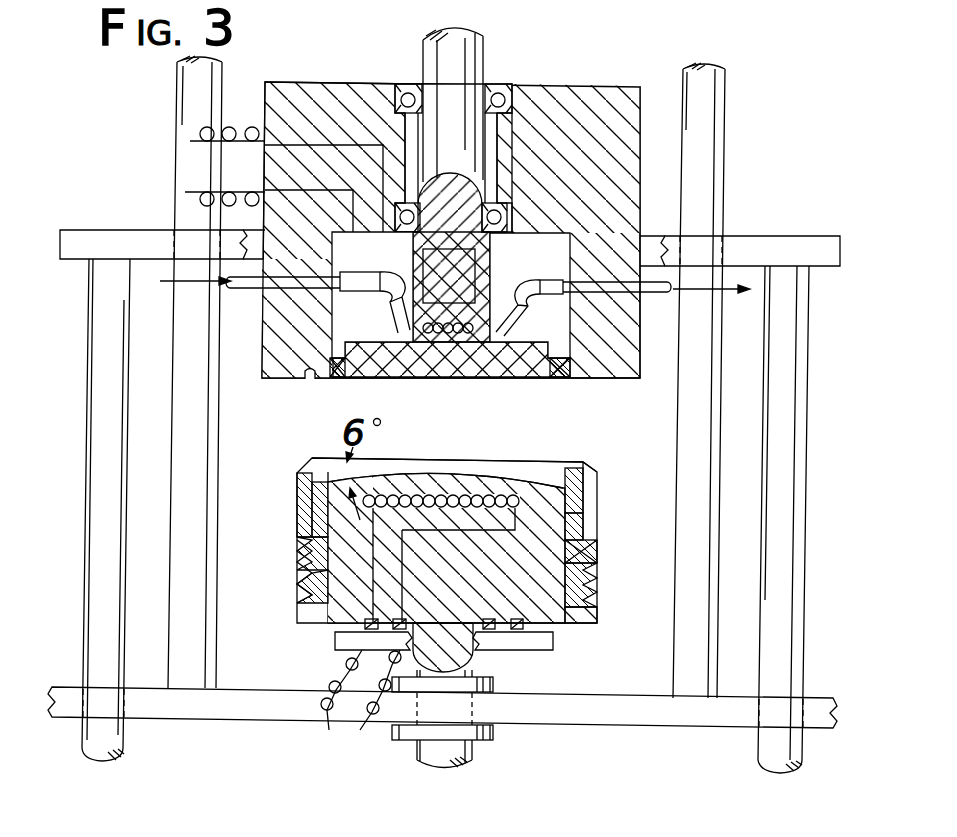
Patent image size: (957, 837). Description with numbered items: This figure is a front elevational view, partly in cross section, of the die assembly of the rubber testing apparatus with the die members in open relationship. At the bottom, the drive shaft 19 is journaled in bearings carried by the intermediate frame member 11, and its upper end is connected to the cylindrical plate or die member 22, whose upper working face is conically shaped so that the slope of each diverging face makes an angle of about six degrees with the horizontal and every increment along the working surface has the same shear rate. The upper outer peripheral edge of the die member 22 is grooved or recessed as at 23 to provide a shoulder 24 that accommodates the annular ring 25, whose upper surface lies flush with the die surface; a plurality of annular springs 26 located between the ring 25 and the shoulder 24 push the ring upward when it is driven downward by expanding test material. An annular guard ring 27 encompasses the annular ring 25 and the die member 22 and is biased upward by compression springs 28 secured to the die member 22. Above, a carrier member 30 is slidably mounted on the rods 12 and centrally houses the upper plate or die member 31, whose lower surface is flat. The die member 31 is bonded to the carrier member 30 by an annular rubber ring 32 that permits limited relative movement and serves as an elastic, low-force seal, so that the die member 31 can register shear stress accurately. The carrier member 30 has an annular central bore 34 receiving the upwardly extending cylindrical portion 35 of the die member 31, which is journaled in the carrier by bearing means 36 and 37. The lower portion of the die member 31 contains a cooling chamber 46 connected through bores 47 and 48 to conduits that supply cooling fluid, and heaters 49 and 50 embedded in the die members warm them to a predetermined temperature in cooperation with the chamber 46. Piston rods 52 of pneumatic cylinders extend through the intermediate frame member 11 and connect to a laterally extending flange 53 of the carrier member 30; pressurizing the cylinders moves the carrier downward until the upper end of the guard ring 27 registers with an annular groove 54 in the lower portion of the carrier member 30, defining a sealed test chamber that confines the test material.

The intermediate frame member 11 is at (502, 710).
The rods 12 is at (193, 88).
The drive shaft 19 is at (435, 750).
The cylindrical plate or die member 22 is at (548, 612).
The groove or recess 23 is at (580, 516).
The shoulder 24 is at (302, 594).
The annular ring 25 is at (320, 507).
The annular springs 26 is at (578, 549).
The annular guard ring 27 is at (590, 492).
The compression springs 28 is at (300, 570).
The carrier member 30 is at (648, 180).
The upper plate or die member 31 is at (472, 370).
The annular rubber ring 32 is at (563, 381).
The annular central bore 34 is at (407, 133).
The cylindrical portion 35 is at (443, 47).
The bearing means 36 is at (497, 202).
The bearing means 37 is at (513, 233).
The cooling chamber 46 is at (488, 310).
The bore 47 is at (397, 348).
The bore 48 is at (476, 347).
The heater 49 is at (443, 345).
The heater 50 is at (487, 502).
The piston rods 52 is at (112, 736).
The laterally extending flange 53 is at (93, 243).
The annular groove 54 is at (313, 370).